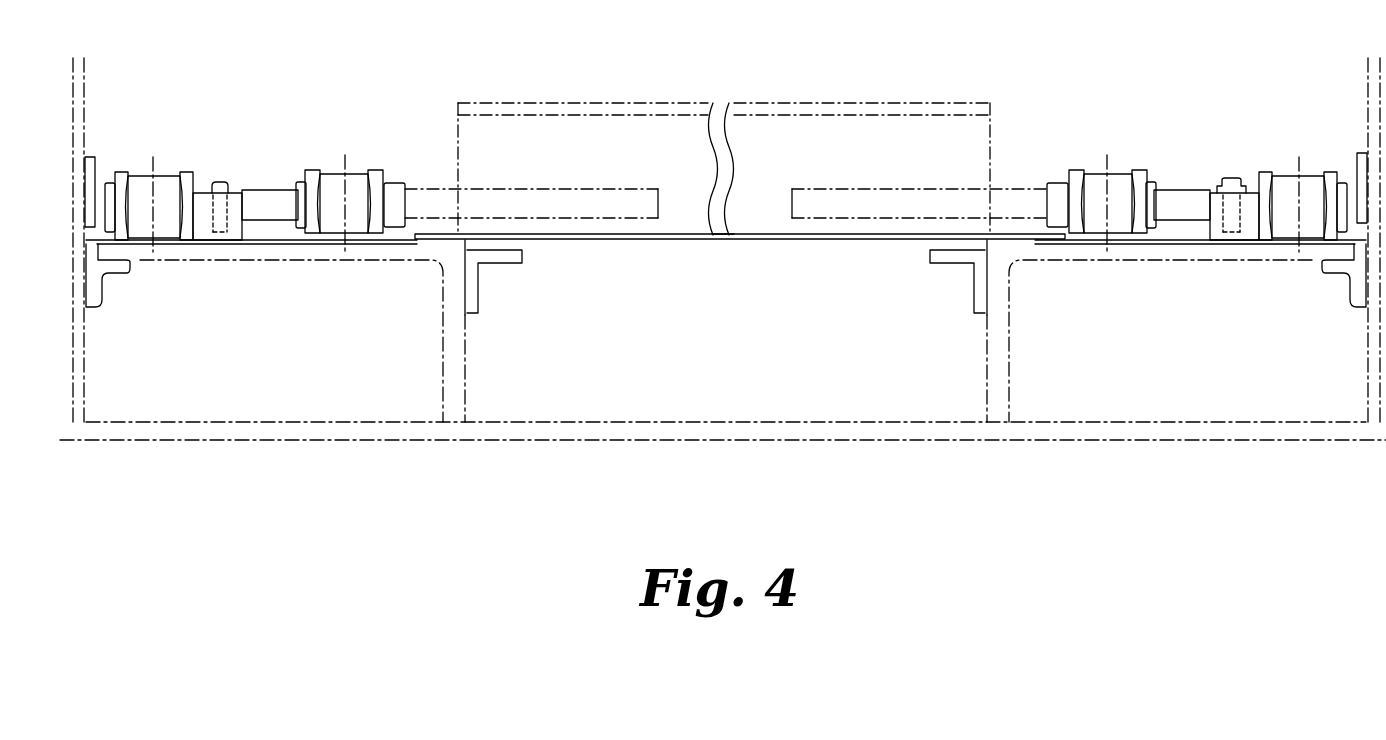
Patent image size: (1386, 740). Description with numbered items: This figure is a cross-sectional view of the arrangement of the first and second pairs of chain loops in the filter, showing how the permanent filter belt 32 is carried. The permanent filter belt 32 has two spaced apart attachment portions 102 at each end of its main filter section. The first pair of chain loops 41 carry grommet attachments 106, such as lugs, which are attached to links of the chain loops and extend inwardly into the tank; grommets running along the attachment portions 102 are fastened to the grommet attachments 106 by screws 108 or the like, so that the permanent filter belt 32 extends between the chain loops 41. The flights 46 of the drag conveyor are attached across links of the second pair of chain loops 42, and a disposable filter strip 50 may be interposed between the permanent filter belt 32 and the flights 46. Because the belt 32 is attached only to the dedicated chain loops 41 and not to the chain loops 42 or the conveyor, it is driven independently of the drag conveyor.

The permanent filter belt 32 is at (647, 238).
The first pair of chain loops 41 is at (147, 186).
The second pair of chain loops 42 is at (353, 180).
The flights 46 is at (976, 160).
The disposable filter strip 50 is at (788, 237).
The attachment portions 102 is at (313, 238).
The grommet attachments 106 is at (233, 204).
The screws 108 is at (223, 220).